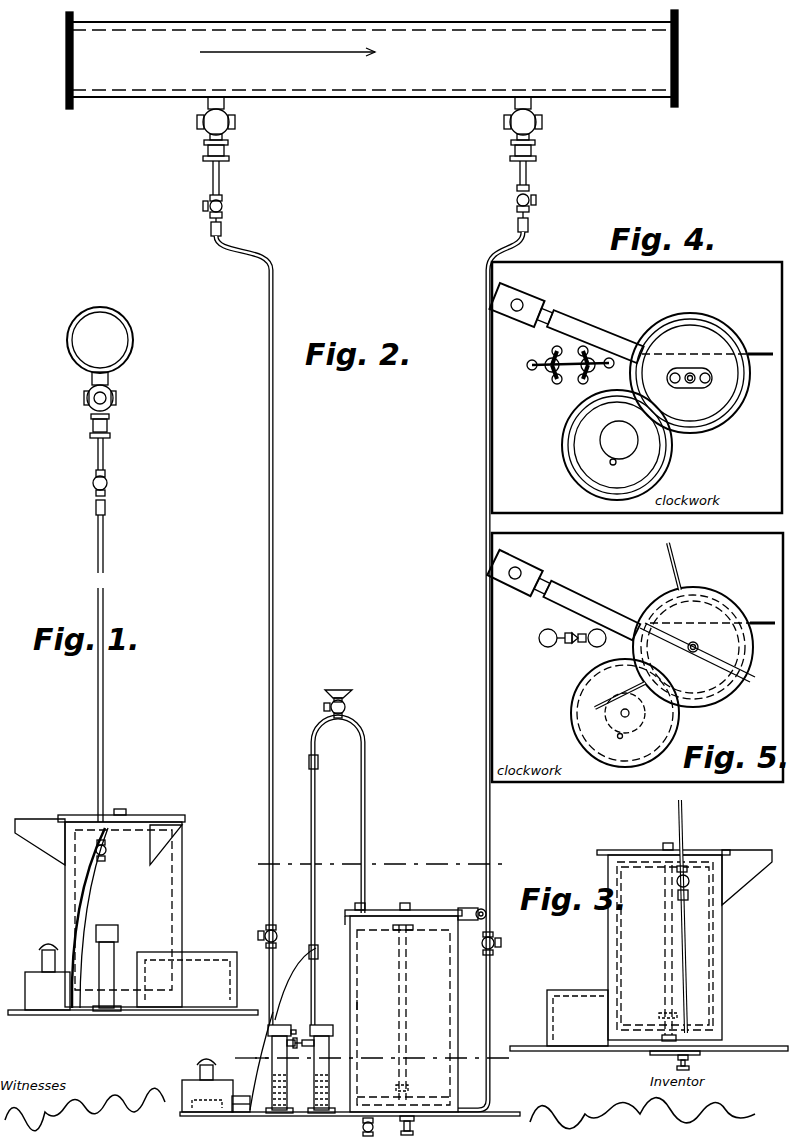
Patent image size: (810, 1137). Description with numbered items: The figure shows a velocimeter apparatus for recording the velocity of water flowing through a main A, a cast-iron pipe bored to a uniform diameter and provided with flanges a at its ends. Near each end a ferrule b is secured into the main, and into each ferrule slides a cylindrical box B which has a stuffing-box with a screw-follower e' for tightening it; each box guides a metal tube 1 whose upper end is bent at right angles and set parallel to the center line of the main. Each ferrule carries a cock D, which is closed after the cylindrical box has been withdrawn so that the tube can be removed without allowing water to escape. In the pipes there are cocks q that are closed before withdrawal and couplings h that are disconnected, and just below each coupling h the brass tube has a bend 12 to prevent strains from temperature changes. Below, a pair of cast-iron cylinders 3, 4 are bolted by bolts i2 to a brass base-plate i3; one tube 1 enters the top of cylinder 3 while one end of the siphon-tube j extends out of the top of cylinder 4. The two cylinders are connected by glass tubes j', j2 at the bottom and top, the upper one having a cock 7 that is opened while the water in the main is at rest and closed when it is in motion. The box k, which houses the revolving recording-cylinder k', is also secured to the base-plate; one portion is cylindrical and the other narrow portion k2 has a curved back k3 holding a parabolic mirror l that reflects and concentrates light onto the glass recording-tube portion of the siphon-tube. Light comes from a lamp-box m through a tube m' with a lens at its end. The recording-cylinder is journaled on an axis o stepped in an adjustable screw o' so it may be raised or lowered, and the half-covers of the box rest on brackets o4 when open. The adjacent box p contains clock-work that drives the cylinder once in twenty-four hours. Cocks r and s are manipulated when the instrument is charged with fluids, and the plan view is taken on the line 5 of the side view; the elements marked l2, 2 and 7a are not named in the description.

In FIG. 2, the main A is at (372, 59).
In FIG. 1, the main A is at (100, 346).
In FIG. 2, the flanges a is at (369, 59).
In FIG. 2, the cock D is at (232, 118).
In FIG. 1, the cock D is at (86, 397).
In FIG. 2, the ferrules b is at (228, 143).
In FIG. 1, the ferrules b is at (109, 416).
In FIG. 2, the cylindrical boxes B is at (226, 154).
In FIG. 1, the cylindrical boxes B is at (108, 428).
In FIG. 2, the screw-follower e' is at (361, 158).
In FIG. 1, the screw-follower e' is at (91, 444).
In FIG. 2, the tubes 1 is at (374, 178).
In FIG. 1, the tubes 1 is at (107, 630).
In FIG. 2, the cocks q is at (368, 201).
In FIG. 2, the couplings h is at (222, 225).
In FIG. 1, the couplings h is at (105, 503).
In FIG. 2, the bend 12 is at (369, 671).
In FIG. 2, the section line 5 5 is at (381, 862).
In FIG. 2, the cylinder 4 is at (373, 1062).
In FIG. 4, the cylinder 4 is at (608, 372).
In FIG. 5, the cylinder 4 is at (601, 641).
In FIG. 2, the siphon-tube j is at (341, 871).
In FIG. 2, the cock s is at (346, 706).
In FIG. 2, the cock r is at (378, 940).
In FIG. 2, the box k is at (415, 1004).
In FIG. 1, the box k is at (132, 914).
In FIG. 3, the box k is at (669, 941).
In FIG. 4, the box k is at (701, 373).
In FIG. 5, the box k is at (694, 643).
In FIG. 2, the revolving cylinder k' is at (404, 1017).
In FIG. 1, the revolving cylinder k' is at (137, 910).
In FIG. 3, the revolving cylinder k' is at (682, 946).
In FIG. 5, the revolving cylinder k' is at (712, 611).
In FIG. 2, the axis o is at (408, 1012).
In FIG. 1, the axis o is at (121, 810).
In FIG. 3, the axis o is at (664, 953).
In FIG. 2, the tank interior l2 is at (358, 1005).
In FIG. 2, the adjustable screw o' is at (416, 1125).
In FIG. 2, the base-plate i3 is at (331, 1127).
In FIG. 2, the glass tube j' is at (300, 1069).
In FIG. 2, the glass tube j2 is at (300, 1050).
In FIG. 5, the glass tube j2 is at (582, 630).
In FIG. 2, the fitting 2 is at (294, 1027).
In FIG. 2, the cylinder 3 is at (261, 1059).
In FIG. 1, the cylinder 3 is at (107, 925).
In FIG. 4, the cylinder 3 is at (568, 369).
In FIG. 5, the cylinder 3 is at (550, 645).
In FIG. 2, the parabolic mirror l is at (319, 950).
In FIG. 2, the curved back k3 is at (322, 950).
In FIG. 1, the curved back k3 is at (72, 896).
In FIG. 4, the curved back k3 is at (600, 335).
In FIG. 5, the curved back k3 is at (592, 608).
In FIG. 2, the narrow portion of box k2 is at (312, 962).
In FIG. 2, the bolts i2 is at (270, 1094).
In FIG. 2, the lamp-box m is at (207, 1085).
In FIG. 1, the lamp-box m is at (47, 977).
In FIG. 4, the lamp-box m is at (531, 305).
In FIG. 5, the lamp-box m is at (530, 574).
In FIG. 2, the tube m' is at (241, 1094).
In FIG. 1, the brackets o4 is at (190, 828).
In FIG. 3, the brackets o4 is at (747, 877).
In FIG. 5, the brackets o4 is at (644, 625).
In FIG. 1, the box p is at (187, 979).
In FIG. 3, the box p is at (577, 1018).
In FIG. 4, the box p is at (672, 462).
In FIG. 5, the box p is at (658, 760).
In FIG. 3, the pipe 7a is at (689, 916).
In FIG. 5, the cock 7 is at (570, 646).